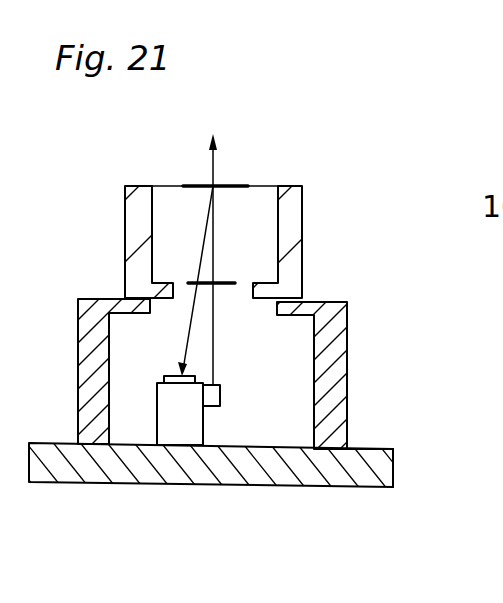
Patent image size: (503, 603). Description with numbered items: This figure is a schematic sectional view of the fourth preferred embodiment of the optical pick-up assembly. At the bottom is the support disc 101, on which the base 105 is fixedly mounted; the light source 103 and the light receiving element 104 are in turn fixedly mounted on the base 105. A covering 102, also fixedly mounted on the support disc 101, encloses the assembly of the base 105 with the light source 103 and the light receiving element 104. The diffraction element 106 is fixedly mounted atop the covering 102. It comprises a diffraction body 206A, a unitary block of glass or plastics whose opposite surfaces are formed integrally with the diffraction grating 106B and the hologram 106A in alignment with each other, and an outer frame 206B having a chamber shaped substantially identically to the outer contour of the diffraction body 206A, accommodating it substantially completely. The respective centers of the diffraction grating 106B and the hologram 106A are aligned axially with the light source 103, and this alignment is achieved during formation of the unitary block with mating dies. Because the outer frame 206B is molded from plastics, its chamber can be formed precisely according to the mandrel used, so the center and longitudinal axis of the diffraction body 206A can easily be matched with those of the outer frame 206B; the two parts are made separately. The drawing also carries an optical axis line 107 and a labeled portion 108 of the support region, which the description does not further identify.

The support disc 101 is at (127, 470).
The covering 102 is at (336, 331).
The light source 103 is at (220, 395).
The light receiving element 104 is at (162, 377).
The base 105 is at (177, 432).
The diffraction element 106 is at (125, 200).
The hologram 106A is at (199, 184).
The diffraction grating 106B is at (233, 283).
The optical axis 107 is at (215, 158).
The base edge portion 108 is at (393, 458).
The diffraction body 206A is at (258, 198).
The outer frame 206B is at (297, 215).